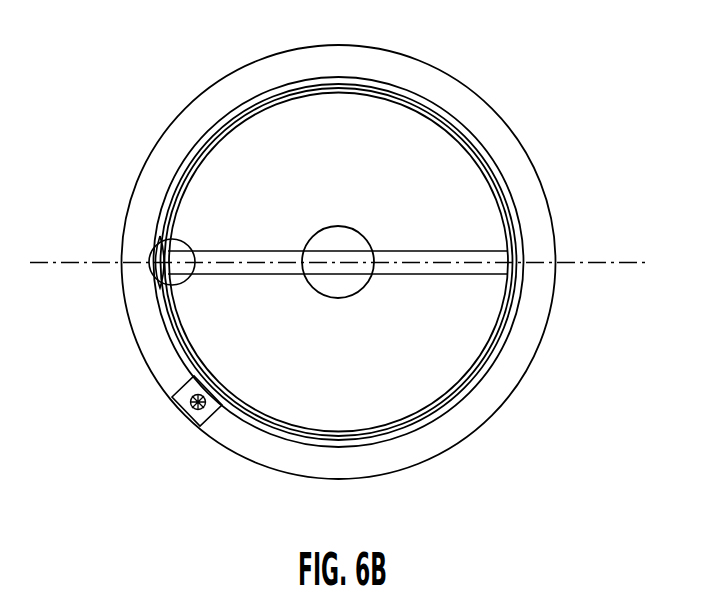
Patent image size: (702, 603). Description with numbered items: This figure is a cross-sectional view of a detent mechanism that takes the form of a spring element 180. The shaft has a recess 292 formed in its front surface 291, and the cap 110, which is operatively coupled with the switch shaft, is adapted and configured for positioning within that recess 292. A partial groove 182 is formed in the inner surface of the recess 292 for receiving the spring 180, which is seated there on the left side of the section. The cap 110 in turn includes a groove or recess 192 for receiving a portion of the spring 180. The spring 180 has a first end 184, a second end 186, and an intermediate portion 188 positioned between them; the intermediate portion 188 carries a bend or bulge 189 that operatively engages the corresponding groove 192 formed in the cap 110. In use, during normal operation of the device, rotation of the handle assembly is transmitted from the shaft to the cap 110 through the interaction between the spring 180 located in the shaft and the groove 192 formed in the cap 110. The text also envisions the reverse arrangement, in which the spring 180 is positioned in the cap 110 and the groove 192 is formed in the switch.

The cap 110 is at (468, 323).
The spring element 180 is at (182, 163).
The partial groove 182 is at (183, 360).
The first end 184 is at (209, 140).
The second end 186 is at (197, 412).
The intermediate portion 188 is at (160, 310).
The bend or bulge 189 is at (155, 272).
The groove 192 is at (188, 243).
The front surface 291 is at (537, 213).
The recess 292 is at (460, 183).